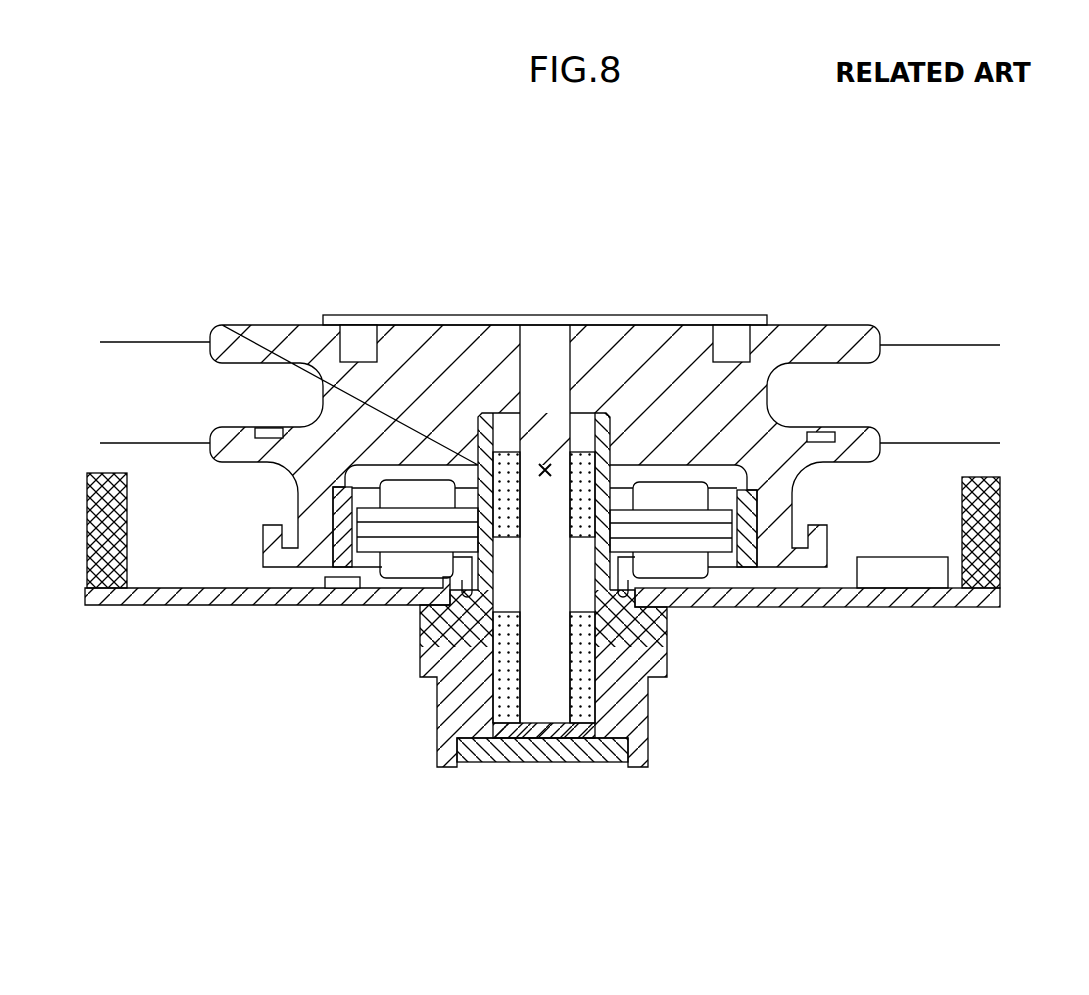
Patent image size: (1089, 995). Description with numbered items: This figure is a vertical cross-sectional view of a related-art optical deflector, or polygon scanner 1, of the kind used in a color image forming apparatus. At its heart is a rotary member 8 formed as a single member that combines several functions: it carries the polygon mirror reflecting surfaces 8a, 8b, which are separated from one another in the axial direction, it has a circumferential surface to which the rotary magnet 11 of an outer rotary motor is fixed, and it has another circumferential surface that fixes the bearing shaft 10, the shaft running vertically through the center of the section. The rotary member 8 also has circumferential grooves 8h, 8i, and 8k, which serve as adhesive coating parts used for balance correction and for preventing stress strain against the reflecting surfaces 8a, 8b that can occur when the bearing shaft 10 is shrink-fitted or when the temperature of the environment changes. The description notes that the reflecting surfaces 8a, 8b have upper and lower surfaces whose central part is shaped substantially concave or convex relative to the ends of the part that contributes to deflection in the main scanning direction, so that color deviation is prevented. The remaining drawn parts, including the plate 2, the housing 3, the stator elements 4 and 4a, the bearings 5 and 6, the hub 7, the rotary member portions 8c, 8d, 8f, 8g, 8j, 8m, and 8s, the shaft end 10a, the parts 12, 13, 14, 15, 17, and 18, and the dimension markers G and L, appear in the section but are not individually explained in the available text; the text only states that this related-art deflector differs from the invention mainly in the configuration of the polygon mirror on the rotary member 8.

The polygon scanner 1 is at (323, 292).
The turntable plate 2 is at (675, 290).
The bearing housing 3 is at (490, 410).
The stator core 4 is at (405, 566).
The stator core tooth 4a is at (385, 568).
The upper bearing 5 is at (578, 457).
The lower bearing 6 is at (580, 707).
The hub (bearing holder) 7 is at (490, 762).
The rotary member 8 is at (410, 337).
The polygon mirror reflecting surface 8a is at (890, 330).
The polygon mirror reflecting surface 8b is at (880, 447).
The rotor yoke top portion 8c is at (760, 313).
The rotor yoke bent portion 8d is at (308, 367).
The rotor yoke projection 8f is at (266, 440).
The rotor yoke leg 8g is at (790, 607).
The circumferential groove 8h is at (805, 533).
The circumferential groove 8i is at (723, 333).
The rotor yoke bent portion 8j is at (790, 390).
The circumferential groove 8k is at (265, 463).
The rotor yoke shaft hole 8m is at (557, 343).
The rotor yoke ledge 8s is at (313, 418).
The bearing shaft 10 is at (535, 343).
The shaft end plate 10a is at (556, 742).
The rotary magnet 11 is at (757, 507).
The circuit board terminal 12 is at (327, 583).
The circuit element 13 is at (922, 557).
The base plate 14 is at (980, 600).
The thrust plate 15 is at (520, 762).
The support member 17 is at (995, 527).
The stator holder 18 is at (585, 595).
The gap G is at (493, 627).
The length L is at (1007, 345).